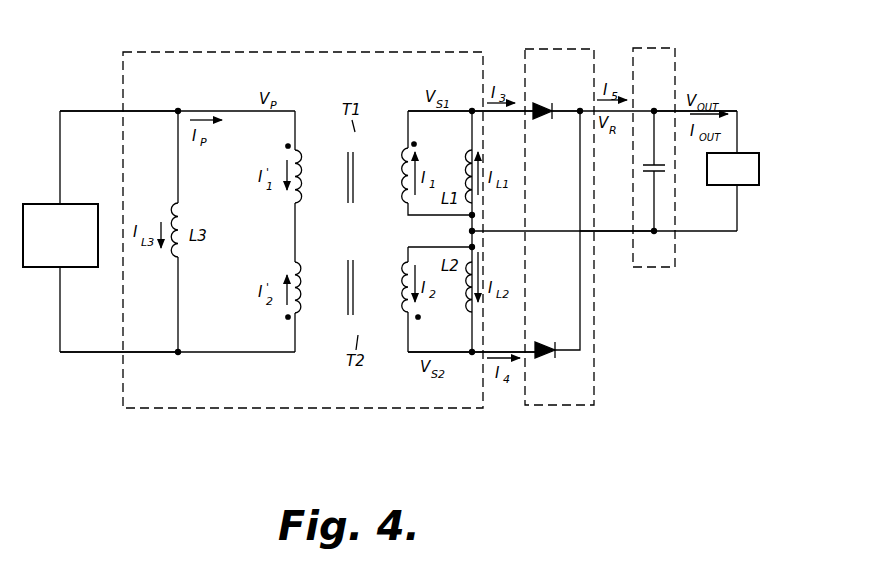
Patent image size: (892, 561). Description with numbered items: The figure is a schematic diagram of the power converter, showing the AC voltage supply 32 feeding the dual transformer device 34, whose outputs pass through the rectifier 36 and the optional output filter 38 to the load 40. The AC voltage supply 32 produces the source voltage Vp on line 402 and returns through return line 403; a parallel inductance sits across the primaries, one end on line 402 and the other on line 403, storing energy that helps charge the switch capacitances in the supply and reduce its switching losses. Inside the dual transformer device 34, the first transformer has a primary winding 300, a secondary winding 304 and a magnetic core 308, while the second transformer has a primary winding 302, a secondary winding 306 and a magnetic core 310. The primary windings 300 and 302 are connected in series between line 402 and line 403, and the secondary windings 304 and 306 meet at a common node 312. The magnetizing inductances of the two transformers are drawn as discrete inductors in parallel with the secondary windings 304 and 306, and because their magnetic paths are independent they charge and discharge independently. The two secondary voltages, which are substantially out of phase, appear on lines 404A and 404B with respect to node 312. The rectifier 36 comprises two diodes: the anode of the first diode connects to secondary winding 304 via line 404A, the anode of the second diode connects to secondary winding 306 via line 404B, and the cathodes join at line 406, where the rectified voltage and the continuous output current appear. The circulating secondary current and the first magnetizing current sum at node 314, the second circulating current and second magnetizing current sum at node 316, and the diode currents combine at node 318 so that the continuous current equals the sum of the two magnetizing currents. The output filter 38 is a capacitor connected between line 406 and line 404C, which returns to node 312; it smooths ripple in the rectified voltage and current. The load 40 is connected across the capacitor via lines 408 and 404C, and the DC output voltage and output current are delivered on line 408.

The AC voltage supply 32 is at (80, 204).
The dual transformer device 34 is at (458, 31).
The rectifier 36 is at (553, 45).
The output filter 38 is at (640, 45).
The load 40 is at (712, 186).
The primary winding 300 is at (297, 151).
The primary winding 302 is at (297, 316).
The secondary winding 304 is at (405, 148).
The secondary winding 306 is at (405, 262).
The magnetic core 308 is at (351, 205).
The magnetic core 310 is at (348, 258).
The node 312 is at (470, 231).
The node 314 is at (470, 108).
The node 316 is at (475, 356).
The node 318 is at (577, 113).
The line 402 is at (88, 111).
The return line 403 is at (85, 355).
The line 404A is at (499, 114).
The line 404B is at (495, 350).
The line 404C is at (612, 233).
The line 406 is at (579, 109).
The line 408 is at (734, 108).